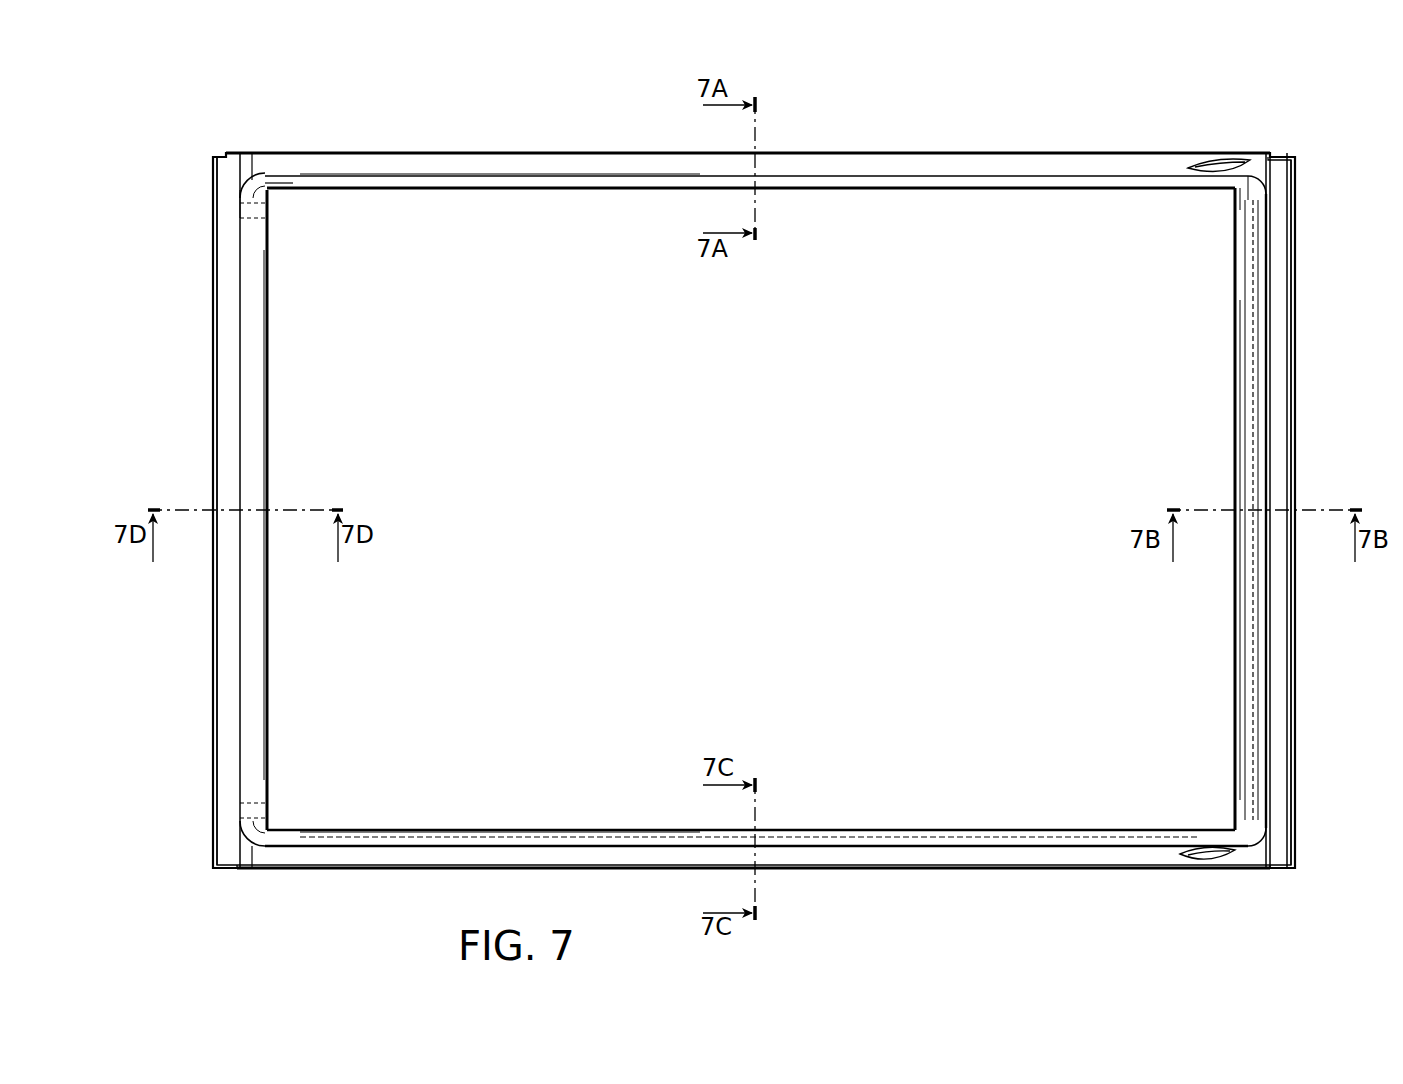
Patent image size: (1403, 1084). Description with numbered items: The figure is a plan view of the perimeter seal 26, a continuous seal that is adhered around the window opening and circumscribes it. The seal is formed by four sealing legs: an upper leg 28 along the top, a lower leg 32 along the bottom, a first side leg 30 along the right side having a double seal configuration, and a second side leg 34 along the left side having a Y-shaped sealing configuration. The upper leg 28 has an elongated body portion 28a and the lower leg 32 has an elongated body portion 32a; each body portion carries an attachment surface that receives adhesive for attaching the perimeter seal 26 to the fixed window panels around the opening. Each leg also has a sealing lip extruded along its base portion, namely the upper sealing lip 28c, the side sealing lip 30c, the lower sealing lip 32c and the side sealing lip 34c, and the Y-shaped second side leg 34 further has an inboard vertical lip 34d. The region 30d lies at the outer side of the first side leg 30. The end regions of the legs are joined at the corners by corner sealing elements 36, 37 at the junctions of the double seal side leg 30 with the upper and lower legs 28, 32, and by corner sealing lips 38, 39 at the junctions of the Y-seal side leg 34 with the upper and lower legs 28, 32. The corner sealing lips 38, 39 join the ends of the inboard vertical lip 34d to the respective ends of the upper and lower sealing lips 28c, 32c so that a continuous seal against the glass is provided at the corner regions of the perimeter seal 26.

The perimeter seal 26 is at (505, 130).
The upper leg 28 is at (903, 212).
The elongated body portion 28a is at (958, 165).
The sealing lip 28c is at (545, 186).
The first side leg 30 is at (1222, 368).
The sealing lip 30c is at (1258, 697).
The right frame wall 30d is at (1296, 338).
The lower leg 32 is at (935, 806).
The elongated body portion 32a is at (976, 870).
The sealing lip 32c is at (858, 828).
The second side leg 34 is at (280, 420).
The sealing lip 34c is at (218, 328).
The inboard vertical lip 34d is at (265, 632).
The corner sealing element 36 is at (1247, 166).
The corner sealing element 37 is at (1233, 852).
The corner sealing lip 38 is at (266, 192).
The corner sealing lip 39 is at (266, 825).